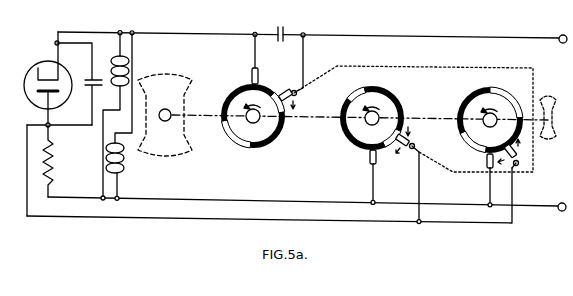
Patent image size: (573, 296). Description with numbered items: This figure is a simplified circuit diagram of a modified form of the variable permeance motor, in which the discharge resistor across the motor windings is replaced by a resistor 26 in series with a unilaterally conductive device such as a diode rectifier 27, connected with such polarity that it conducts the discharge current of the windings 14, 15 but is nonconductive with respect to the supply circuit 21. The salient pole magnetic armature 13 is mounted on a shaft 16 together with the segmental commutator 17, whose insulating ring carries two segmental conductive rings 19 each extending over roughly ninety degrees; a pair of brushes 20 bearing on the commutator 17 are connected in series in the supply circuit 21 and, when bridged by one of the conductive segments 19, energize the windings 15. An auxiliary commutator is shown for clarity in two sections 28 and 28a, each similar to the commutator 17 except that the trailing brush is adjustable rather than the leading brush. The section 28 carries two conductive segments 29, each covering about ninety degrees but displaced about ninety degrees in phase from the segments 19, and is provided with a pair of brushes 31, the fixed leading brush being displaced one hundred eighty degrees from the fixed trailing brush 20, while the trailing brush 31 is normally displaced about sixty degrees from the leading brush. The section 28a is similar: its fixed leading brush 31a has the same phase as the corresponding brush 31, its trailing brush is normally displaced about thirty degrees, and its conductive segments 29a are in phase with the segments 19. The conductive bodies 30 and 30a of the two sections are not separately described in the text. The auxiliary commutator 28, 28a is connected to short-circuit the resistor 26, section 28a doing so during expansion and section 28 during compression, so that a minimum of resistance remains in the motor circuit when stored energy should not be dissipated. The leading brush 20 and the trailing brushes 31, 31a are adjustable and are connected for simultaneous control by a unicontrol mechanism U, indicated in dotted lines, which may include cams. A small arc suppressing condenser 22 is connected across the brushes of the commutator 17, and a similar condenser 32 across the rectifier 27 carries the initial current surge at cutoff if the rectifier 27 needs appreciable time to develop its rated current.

The salient pole magnetic armature 13 is at (165, 100).
The winding 14 is at (113, 57).
The winding 15 is at (126, 170).
The shaft 16 is at (166, 172).
The segmental commutator 17 is at (271, 139).
The segmental conductive ring 19 is at (281, 88).
The brush 20 is at (250, 76).
The supply circuit 21 is at (449, 34).
The arc suppressing condenser 22 is at (279, 26).
The resistor 26 is at (55, 156).
The diode rectifier 27 is at (37, 66).
The auxiliary commutator section 28 is at (344, 144).
The auxiliary commutator section 28a is at (462, 134).
The conductive segment 29 is at (361, 83).
The conductive segment 29a is at (490, 88).
The conductive ring of second commutator 30 is at (398, 88).
The conductive ring of third commutator 30a is at (522, 114).
The brush 31 is at (370, 160).
The brush 31a is at (520, 156).
The condenser 32 is at (88, 78).
The unicontrol mechanism U is at (536, 88).